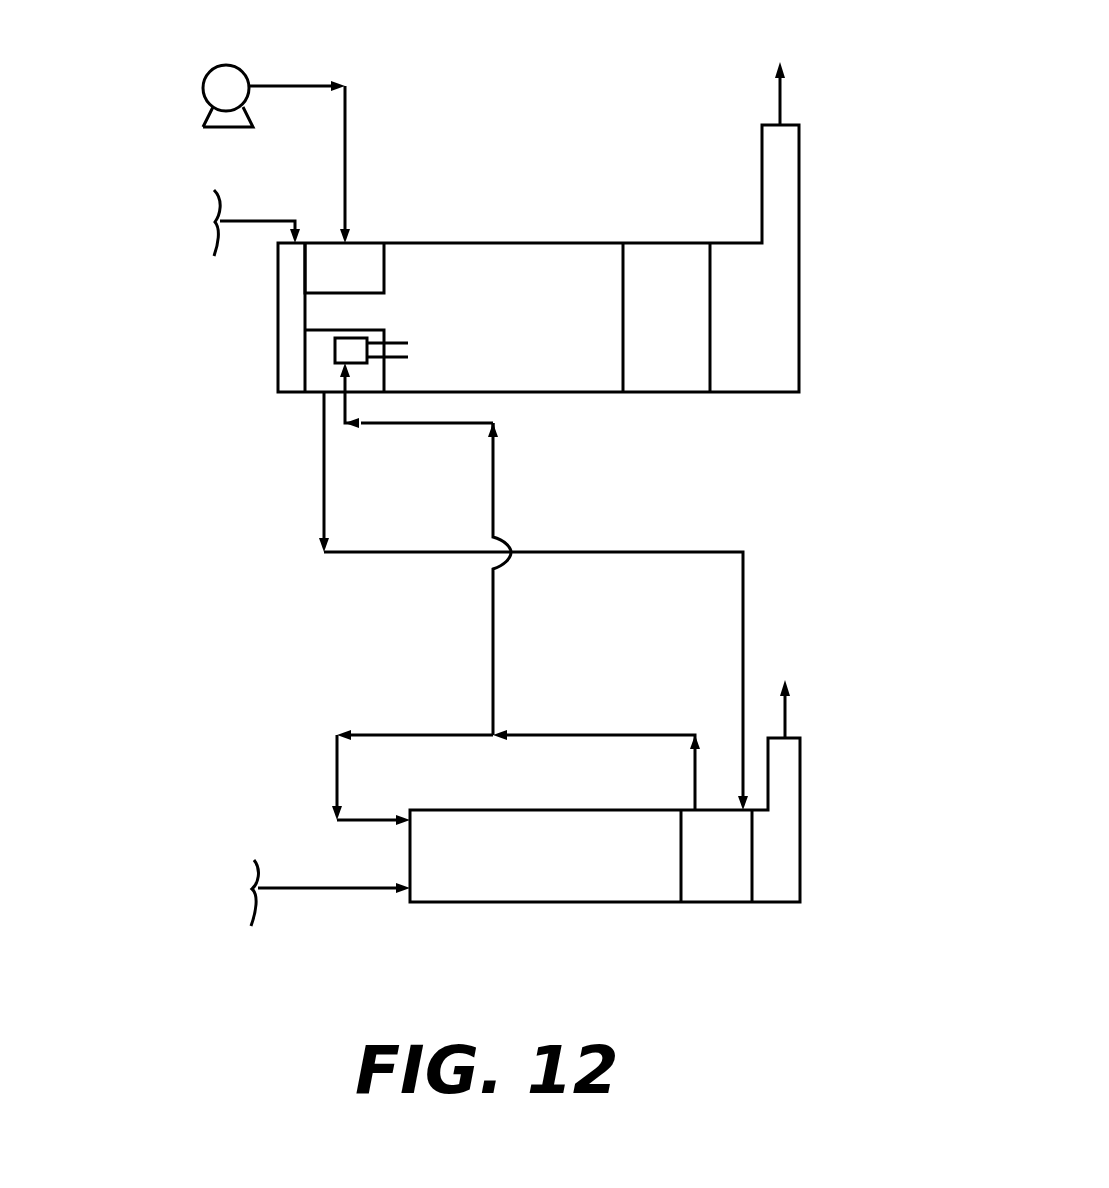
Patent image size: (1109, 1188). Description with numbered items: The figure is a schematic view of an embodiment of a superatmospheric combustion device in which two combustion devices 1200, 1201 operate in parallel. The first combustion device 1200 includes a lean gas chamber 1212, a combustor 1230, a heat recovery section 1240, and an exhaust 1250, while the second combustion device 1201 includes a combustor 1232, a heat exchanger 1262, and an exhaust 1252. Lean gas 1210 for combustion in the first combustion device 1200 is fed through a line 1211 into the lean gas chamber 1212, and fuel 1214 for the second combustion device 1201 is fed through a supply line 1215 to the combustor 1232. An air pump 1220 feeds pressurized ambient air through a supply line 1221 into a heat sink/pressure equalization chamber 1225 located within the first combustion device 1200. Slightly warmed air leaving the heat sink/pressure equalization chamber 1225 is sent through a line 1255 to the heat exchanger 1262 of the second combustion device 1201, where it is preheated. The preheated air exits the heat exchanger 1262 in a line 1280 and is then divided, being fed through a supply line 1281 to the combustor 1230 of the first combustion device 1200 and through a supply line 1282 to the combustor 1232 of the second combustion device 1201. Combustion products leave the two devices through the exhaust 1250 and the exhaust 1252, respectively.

The combustion device 1200 is at (440, 230).
The combustion device 1201 is at (590, 797).
The lean gas 1210 is at (165, 226).
The line 1211 is at (243, 220).
The lean gas chamber 1212 is at (287, 280).
The fuel 1214 is at (203, 892).
The supply line 1215 is at (275, 890).
The air pump 1220 is at (205, 118).
The supply line 1221 is at (310, 60).
The heat sink/pressure equalization chamber 1225 is at (348, 273).
The combustor 1230 is at (576, 341).
The combustor 1232 is at (575, 872).
The heat recovery section 1240 is at (706, 341).
The exhaust 1250 is at (768, 62).
The exhaust 1252 is at (825, 690).
The line 1255 is at (324, 458).
The heat exchanger 1262 is at (727, 858).
The line 1280 is at (620, 733).
The supply line 1281 is at (493, 622).
The supply line 1282 is at (408, 733).